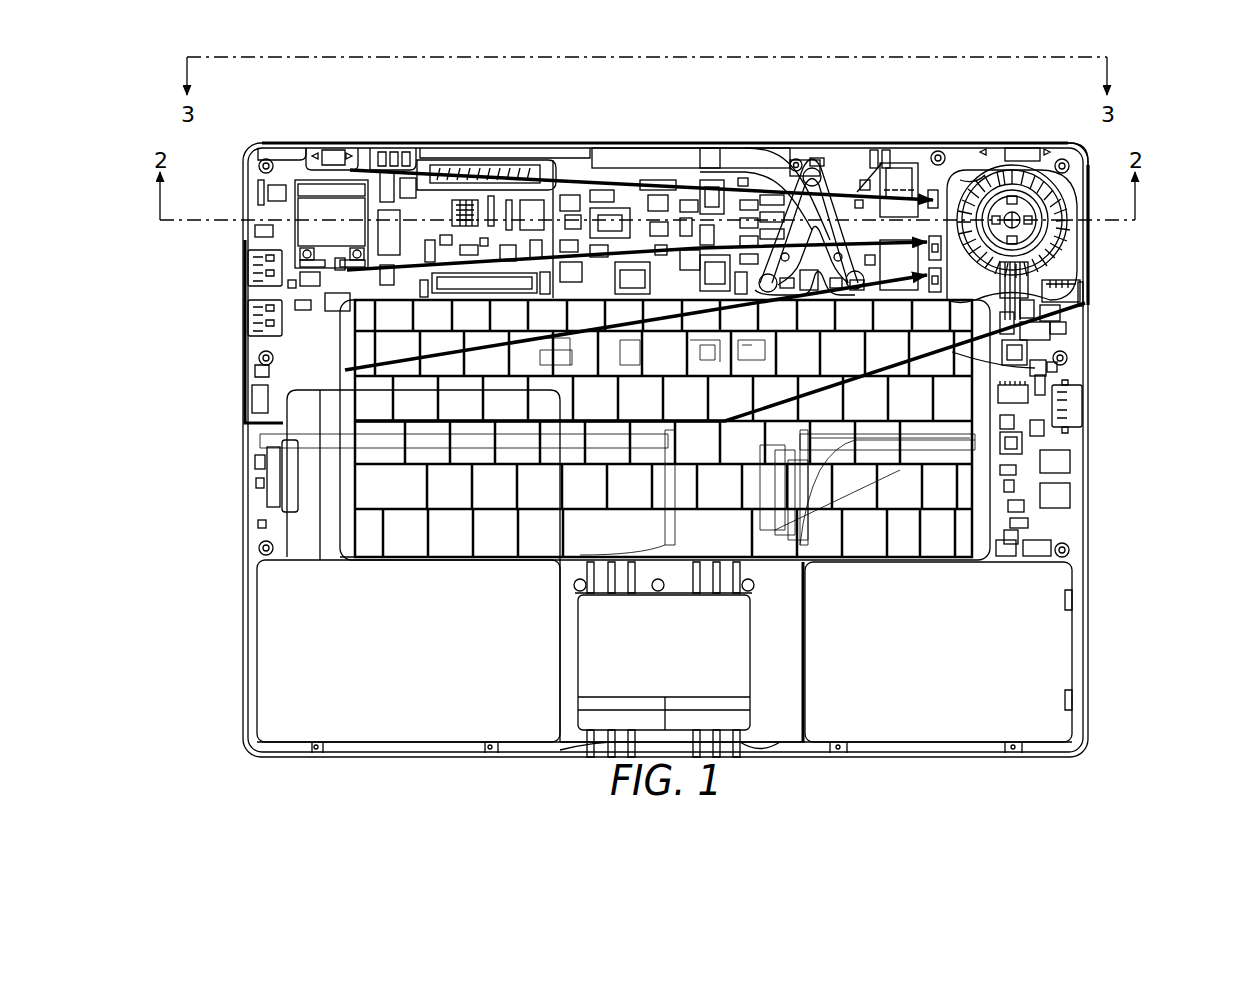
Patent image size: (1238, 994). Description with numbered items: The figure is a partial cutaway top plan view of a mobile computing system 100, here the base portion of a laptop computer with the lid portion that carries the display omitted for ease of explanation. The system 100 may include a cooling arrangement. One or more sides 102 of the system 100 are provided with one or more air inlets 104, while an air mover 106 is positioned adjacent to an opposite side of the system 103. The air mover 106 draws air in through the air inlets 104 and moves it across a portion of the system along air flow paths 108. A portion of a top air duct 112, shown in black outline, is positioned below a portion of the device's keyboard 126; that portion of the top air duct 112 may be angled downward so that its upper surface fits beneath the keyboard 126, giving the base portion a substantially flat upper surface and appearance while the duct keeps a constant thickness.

The mobile computing system 100 is at (1165, 325).
The sides 102 is at (523, 137).
The opposite side of the system 103 is at (1092, 160).
The air inlets 104 is at (270, 143).
The air mover 106 is at (1017, 175).
The air flow paths 108 is at (720, 313).
The top air duct 112 is at (1058, 369).
The keyboard 126 is at (368, 494).